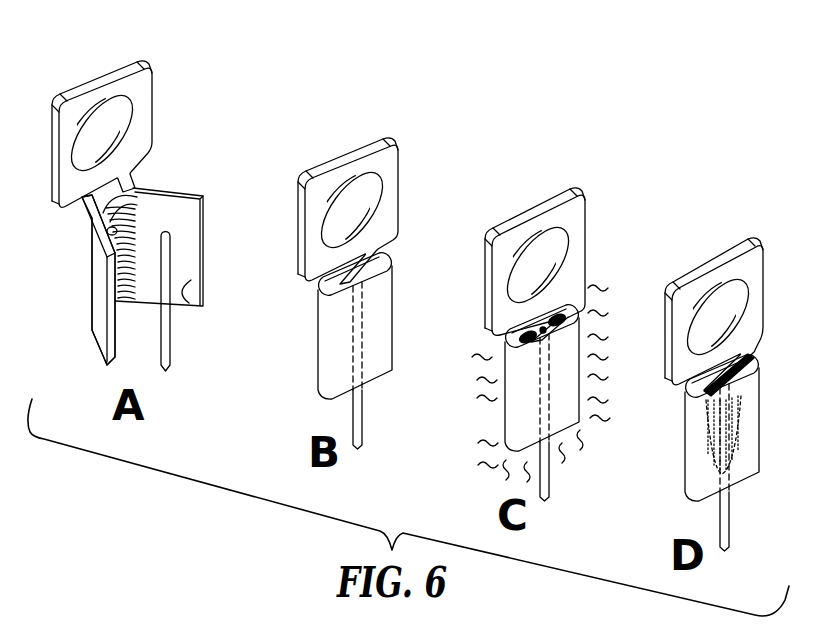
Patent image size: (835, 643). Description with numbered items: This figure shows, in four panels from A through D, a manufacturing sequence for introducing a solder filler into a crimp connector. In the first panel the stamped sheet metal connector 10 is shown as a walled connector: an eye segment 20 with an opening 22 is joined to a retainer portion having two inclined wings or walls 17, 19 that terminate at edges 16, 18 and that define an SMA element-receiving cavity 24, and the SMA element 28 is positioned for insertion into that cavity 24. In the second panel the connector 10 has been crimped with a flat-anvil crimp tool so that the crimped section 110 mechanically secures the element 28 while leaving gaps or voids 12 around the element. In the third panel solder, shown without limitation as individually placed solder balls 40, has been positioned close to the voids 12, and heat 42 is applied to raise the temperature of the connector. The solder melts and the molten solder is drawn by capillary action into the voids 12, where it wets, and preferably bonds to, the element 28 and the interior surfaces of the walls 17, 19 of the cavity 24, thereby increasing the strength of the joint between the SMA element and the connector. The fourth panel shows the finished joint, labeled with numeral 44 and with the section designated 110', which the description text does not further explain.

The connector 10 is at (88, 280).
The voids 12 is at (379, 250).
The edge 16 is at (118, 337).
The inclined wall 17 is at (96, 224).
The edge 18 is at (205, 266).
The inclined wall 19 is at (205, 304).
The eye segment 20 is at (85, 87).
The opening 22 is at (109, 132).
The element-receiving cavity 24 is at (134, 210).
The SMA element 28 is at (168, 250).
The solder balls 40 is at (565, 303).
The heat 42 is at (495, 429).
The melted solder 44 is at (750, 342).
The crimped section 110 is at (395, 351).
The heat-shrunk solder sleeve 110' is at (680, 453).